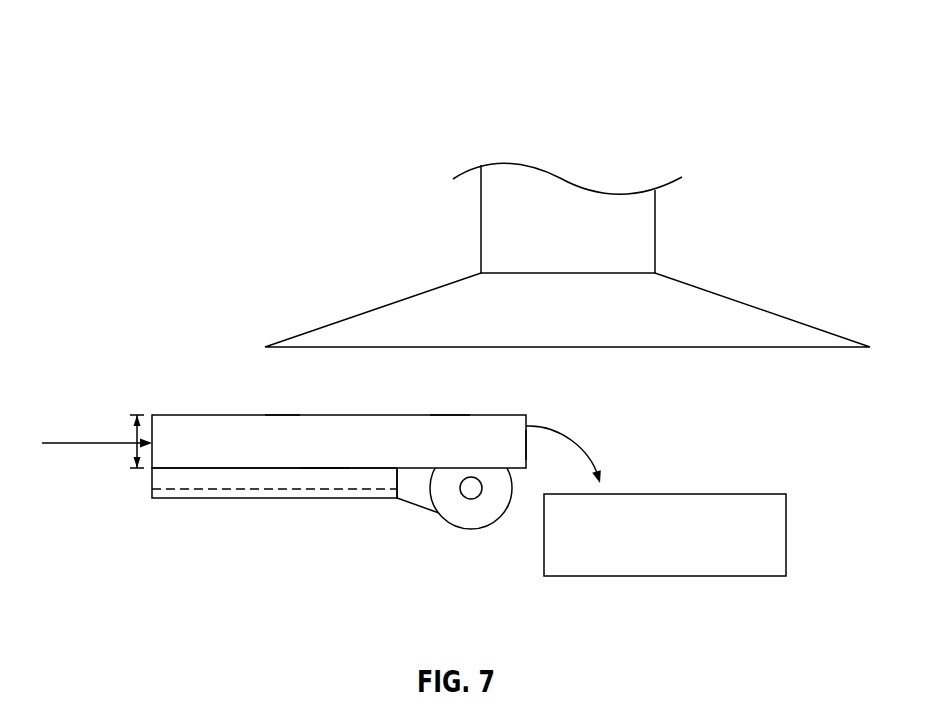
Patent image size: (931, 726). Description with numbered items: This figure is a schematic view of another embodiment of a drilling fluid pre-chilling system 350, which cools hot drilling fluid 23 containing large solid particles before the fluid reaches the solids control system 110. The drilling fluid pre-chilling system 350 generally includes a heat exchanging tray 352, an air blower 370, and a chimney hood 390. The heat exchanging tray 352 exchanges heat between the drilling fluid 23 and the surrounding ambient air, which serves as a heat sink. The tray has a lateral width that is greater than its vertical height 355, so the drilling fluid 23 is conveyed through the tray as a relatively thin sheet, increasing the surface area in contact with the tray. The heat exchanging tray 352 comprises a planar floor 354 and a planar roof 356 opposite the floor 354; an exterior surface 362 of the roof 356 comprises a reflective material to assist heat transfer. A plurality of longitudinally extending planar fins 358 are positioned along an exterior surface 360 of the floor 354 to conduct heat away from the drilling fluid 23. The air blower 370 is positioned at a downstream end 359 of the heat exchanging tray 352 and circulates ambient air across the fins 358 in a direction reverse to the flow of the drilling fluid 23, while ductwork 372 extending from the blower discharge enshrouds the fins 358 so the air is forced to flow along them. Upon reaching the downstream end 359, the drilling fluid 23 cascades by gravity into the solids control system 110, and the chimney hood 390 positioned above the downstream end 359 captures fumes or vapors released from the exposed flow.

The drilling fluid pre-chilling system 350 is at (114, 112).
The chimney hood 390 is at (386, 310).
The drilling fluid 23 is at (53, 440).
The vertical height 355 is at (130, 430).
The heat exchanging tray 352 is at (165, 415).
The planar roof 356 is at (275, 415).
The planar floor 354 is at (325, 466).
The exterior surface of the roof 362 is at (450, 415).
The downstream end 359 is at (527, 434).
The fins 358 is at (172, 492).
The exterior surface of the floor 360 is at (255, 470).
The ductwork 372 is at (413, 495).
The air blower 370 is at (470, 515).
The solids control system 110 is at (733, 494).